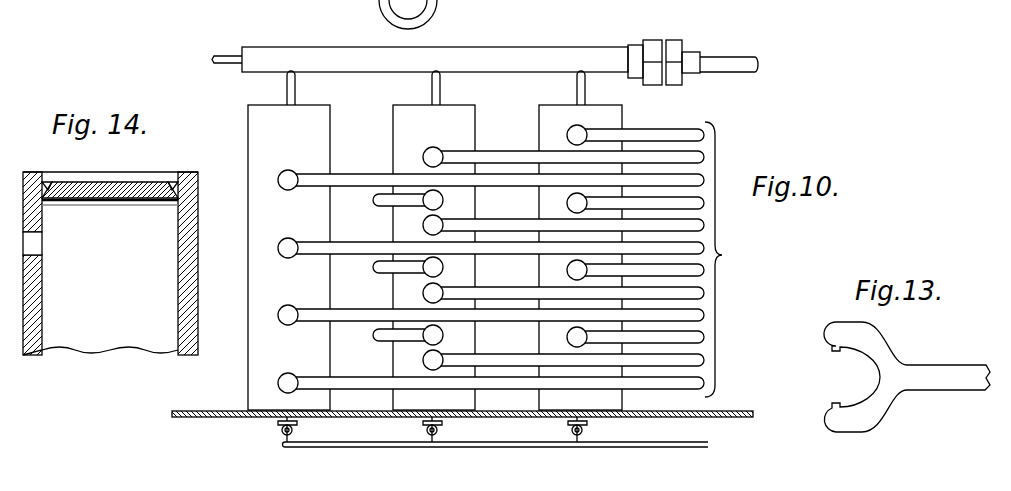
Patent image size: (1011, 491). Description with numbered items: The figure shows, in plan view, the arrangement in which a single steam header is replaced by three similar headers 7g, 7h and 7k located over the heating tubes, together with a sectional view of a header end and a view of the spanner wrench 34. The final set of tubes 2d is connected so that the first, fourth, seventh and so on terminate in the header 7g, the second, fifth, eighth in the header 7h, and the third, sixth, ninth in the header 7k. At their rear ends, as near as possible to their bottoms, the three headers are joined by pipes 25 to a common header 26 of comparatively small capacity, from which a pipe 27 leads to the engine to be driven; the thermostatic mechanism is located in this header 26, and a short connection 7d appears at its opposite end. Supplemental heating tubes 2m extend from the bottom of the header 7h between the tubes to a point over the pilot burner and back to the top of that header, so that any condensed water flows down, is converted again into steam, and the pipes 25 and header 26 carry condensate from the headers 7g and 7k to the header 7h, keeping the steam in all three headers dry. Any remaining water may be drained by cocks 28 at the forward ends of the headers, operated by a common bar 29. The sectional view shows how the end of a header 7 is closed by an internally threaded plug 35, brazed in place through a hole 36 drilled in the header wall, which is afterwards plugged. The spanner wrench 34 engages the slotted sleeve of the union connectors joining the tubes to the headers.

In FIG. 10, the common header 26 is at (483, 58).
In FIG. 10, the pipe connection 7d is at (218, 57).
In FIG. 10, the pipe 27 is at (722, 66).
In FIG. 10, the pipes 25 is at (292, 90).
In FIG. 10, the header 7k is at (332, 152).
In FIG. 10, the header 7h is at (477, 152).
In FIG. 10, the header 7g is at (624, 132).
In FIG. 10, the final set of tubes 2d is at (520, 259).
In FIG. 10, the supplemental heating tubes 2m is at (377, 201).
In FIG. 10, the cocks 28 is at (297, 432).
In FIG. 10, the common bar 29 is at (708, 446).
In FIG. 14, the steam header 7 is at (190, 327).
In FIG. 14, the hole 36 is at (35, 244).
In FIG. 14, the plug 35 is at (115, 181).
In FIG. 13, the spanner wrench 34 is at (925, 368).